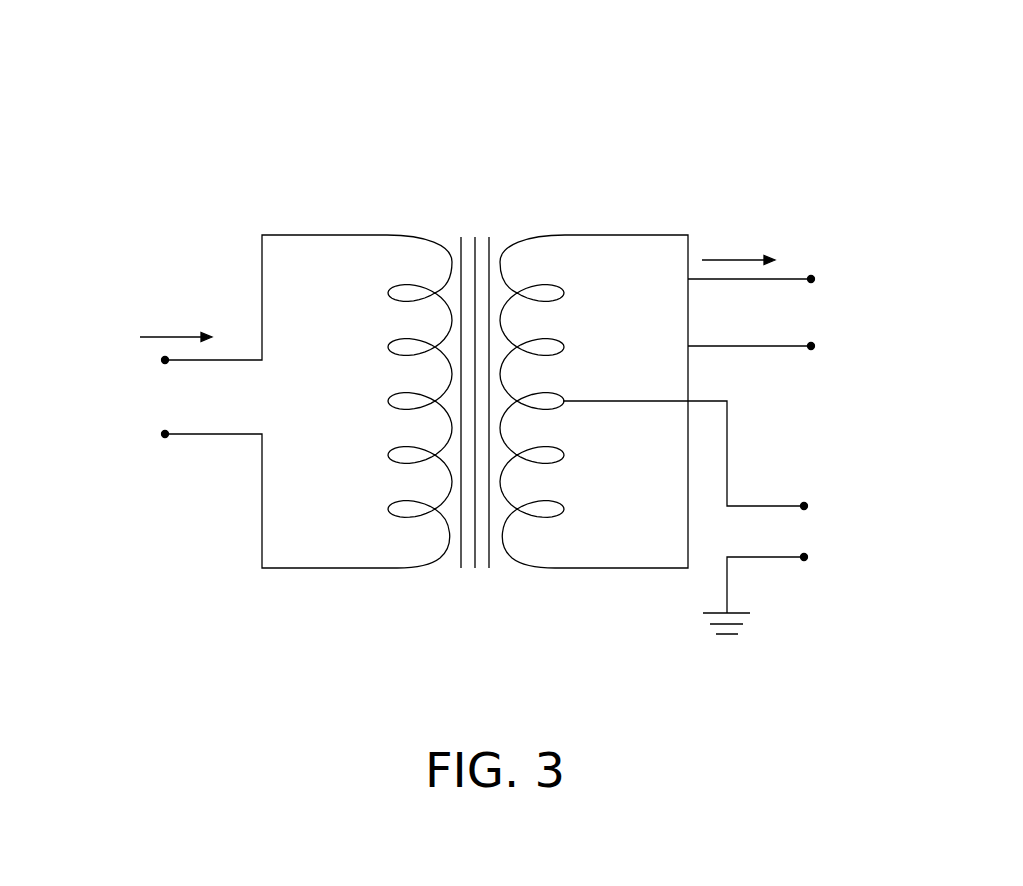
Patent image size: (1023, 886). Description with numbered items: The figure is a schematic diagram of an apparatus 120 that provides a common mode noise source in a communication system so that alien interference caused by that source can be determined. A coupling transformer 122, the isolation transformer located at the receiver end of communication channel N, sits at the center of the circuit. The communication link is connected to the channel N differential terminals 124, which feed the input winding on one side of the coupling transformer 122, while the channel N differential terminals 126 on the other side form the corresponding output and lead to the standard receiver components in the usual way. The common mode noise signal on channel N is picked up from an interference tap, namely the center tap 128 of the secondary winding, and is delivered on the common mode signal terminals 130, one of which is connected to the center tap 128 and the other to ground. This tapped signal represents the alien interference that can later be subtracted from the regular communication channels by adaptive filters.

The apparatus 120 is at (780, 80).
The coupling transformer 122 is at (432, 215).
The channel N differential terminals 124 is at (163, 455).
The channel N differential terminals 126 is at (822, 258).
The center tap 128 is at (570, 385).
The terminals 130 is at (806, 585).